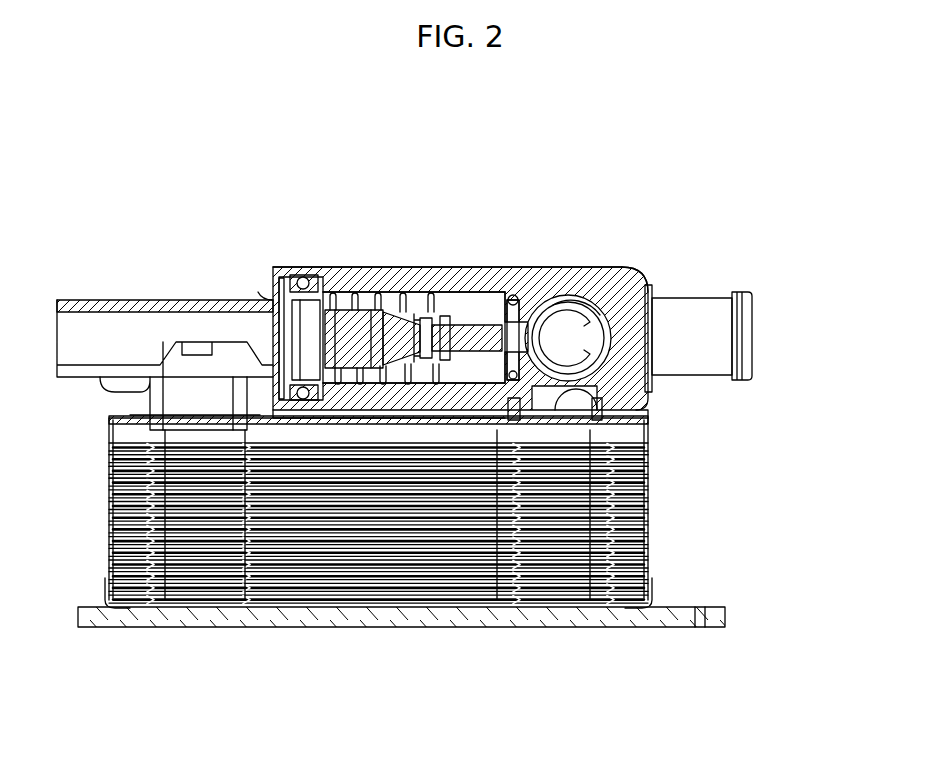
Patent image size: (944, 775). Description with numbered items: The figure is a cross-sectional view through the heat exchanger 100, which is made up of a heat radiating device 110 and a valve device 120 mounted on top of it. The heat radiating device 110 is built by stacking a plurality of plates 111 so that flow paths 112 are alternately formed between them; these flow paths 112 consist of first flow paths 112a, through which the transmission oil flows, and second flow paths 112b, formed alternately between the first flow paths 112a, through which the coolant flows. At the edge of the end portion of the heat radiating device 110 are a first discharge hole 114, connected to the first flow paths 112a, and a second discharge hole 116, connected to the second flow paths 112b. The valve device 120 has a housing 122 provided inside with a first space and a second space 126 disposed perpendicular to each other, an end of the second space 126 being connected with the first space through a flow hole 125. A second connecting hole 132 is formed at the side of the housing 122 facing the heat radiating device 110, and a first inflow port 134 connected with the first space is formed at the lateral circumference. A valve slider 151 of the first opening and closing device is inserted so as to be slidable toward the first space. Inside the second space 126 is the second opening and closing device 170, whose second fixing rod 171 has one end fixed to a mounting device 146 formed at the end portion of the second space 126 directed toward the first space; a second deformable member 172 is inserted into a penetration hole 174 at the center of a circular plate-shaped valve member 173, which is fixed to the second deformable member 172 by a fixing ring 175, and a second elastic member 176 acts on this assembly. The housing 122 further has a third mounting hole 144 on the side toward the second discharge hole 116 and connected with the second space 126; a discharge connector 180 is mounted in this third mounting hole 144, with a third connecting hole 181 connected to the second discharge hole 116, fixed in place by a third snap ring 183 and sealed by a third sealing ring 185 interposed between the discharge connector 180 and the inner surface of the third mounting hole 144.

The heat exchanger 100 is at (410, 114).
The heat radiating device 110 is at (657, 544).
The plates 111 is at (653, 517).
The flow paths 112 is at (285, 716).
The first flow path 112a is at (305, 535).
The second flow path 112b is at (380, 498).
The first discharge hole 114 is at (562, 437).
The second discharge hole 116 is at (190, 437).
The valve device 120 is at (548, 188).
The housing 122 is at (493, 267).
The flow hole 125 is at (515, 327).
The second space 126 is at (543, 296).
The second connecting hole 132 is at (530, 424).
The first inflow port 134 is at (700, 310).
The third mounting hole 144 is at (290, 387).
The mounting device 146 is at (577, 320).
The valve slider 151 is at (632, 267).
The second opening and closing device 170 is at (503, 292).
The second fixing rod 171 is at (523, 367).
The second deformable member 172 is at (382, 312).
The valve member 173 is at (470, 308).
The penetration hole 174 is at (423, 337).
The fixing ring 175 is at (455, 326).
The second elastic member 176 is at (370, 303).
The discharge connector 180 is at (103, 300).
The third connecting hole 181 is at (168, 408).
The third snap ring 183 is at (273, 287).
The third sealing ring 185 is at (303, 277).